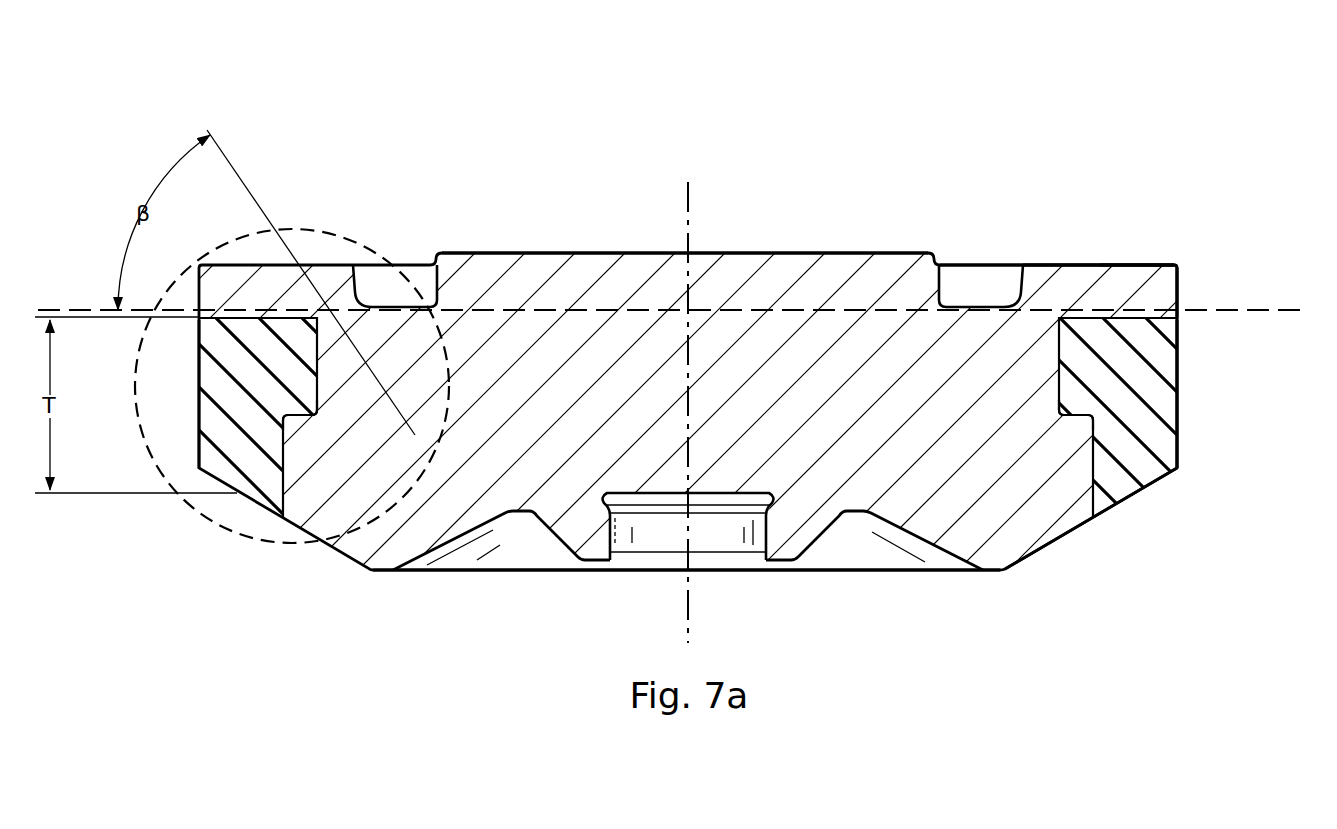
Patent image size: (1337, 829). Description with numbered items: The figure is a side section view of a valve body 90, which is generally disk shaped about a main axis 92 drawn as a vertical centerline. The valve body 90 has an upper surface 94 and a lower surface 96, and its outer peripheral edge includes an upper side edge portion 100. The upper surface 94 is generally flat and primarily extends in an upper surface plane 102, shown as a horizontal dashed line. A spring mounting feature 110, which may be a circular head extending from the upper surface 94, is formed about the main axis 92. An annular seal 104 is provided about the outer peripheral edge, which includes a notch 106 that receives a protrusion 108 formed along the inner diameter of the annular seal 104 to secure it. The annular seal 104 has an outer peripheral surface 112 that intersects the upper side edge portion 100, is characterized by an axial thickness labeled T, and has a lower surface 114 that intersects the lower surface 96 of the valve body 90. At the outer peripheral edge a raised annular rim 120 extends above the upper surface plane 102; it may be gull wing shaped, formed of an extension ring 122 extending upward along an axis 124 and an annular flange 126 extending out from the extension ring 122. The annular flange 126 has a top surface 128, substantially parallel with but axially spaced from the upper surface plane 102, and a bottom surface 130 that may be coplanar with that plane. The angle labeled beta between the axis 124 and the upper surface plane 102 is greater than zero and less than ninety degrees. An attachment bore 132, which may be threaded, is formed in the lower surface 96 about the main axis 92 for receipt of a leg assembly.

The valve body 90 is at (437, 172).
The main axis 92 is at (685, 193).
The upper surface 94 is at (987, 306).
The lower surface 96 is at (1000, 575).
The upper side edge portion 100 is at (1178, 285).
The upper surface plane 102 is at (1297, 308).
The annular seal 104 is at (190, 372).
The notch 106 is at (1073, 365).
The protrusion 108 is at (302, 392).
The spring mounting feature 110 is at (545, 260).
The outer peripheral surface 112 is at (198, 405).
The lower surface 114 is at (1127, 500).
The raised annular rim 120 is at (1120, 228).
The extension ring 122 is at (358, 265).
The extension ring axis 124 is at (258, 200).
The annular flange 126 is at (1153, 293).
The top surface 128 is at (1090, 263).
The bottom surface 130 is at (1123, 320).
The attachment bore 132 is at (612, 543).